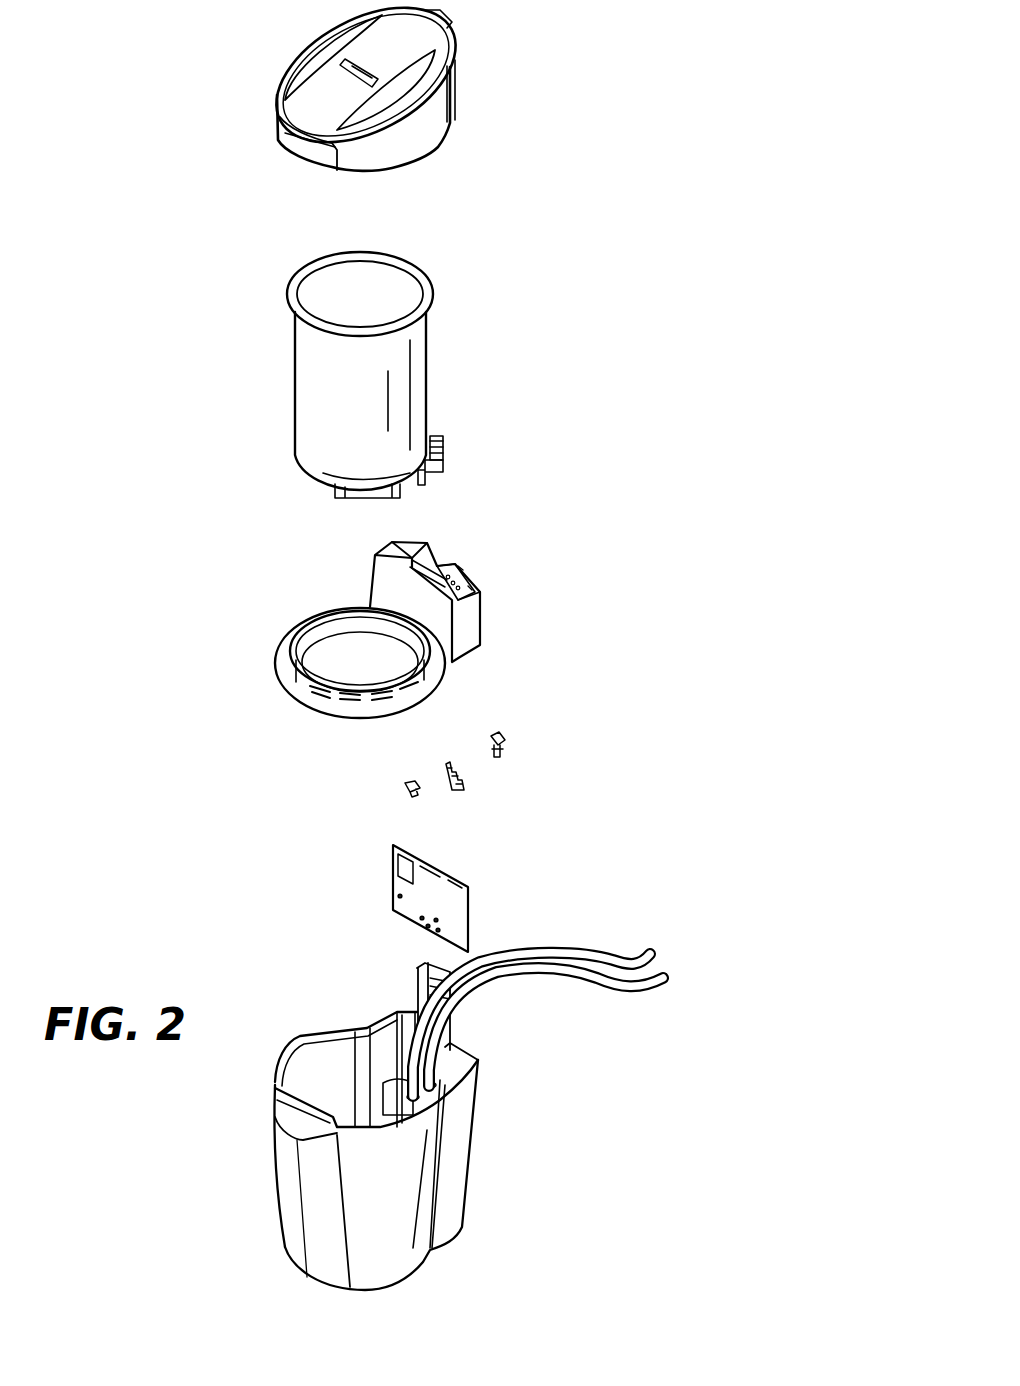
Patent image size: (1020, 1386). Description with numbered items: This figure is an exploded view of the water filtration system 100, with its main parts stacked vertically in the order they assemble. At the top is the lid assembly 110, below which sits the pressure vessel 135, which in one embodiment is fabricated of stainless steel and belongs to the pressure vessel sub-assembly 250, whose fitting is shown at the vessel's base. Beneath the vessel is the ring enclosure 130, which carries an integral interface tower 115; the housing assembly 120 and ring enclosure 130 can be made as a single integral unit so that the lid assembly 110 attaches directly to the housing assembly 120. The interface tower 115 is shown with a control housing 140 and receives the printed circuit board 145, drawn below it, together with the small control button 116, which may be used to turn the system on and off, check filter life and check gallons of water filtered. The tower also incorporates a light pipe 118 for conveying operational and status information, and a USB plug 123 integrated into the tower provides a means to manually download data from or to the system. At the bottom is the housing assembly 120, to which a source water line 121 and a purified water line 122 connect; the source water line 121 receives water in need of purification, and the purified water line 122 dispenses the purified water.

The water filtration system 100 is at (657, 147).
The lid assembly 110 is at (279, 114).
The pressure vessel 135 is at (444, 378).
The pressure vessel sub-assembly 250 is at (418, 484).
The interface tower 115 is at (362, 572).
The control housing 140 is at (475, 577).
The ring enclosure 130 is at (280, 662).
The control button 116 is at (507, 752).
The light pipe 118 is at (462, 786).
The USB plug 123 is at (407, 788).
The printed circuit board 145 is at (468, 915).
The housing assembly 120 is at (478, 1152).
The source water line 121 is at (615, 972).
The purified water line 122 is at (662, 990).